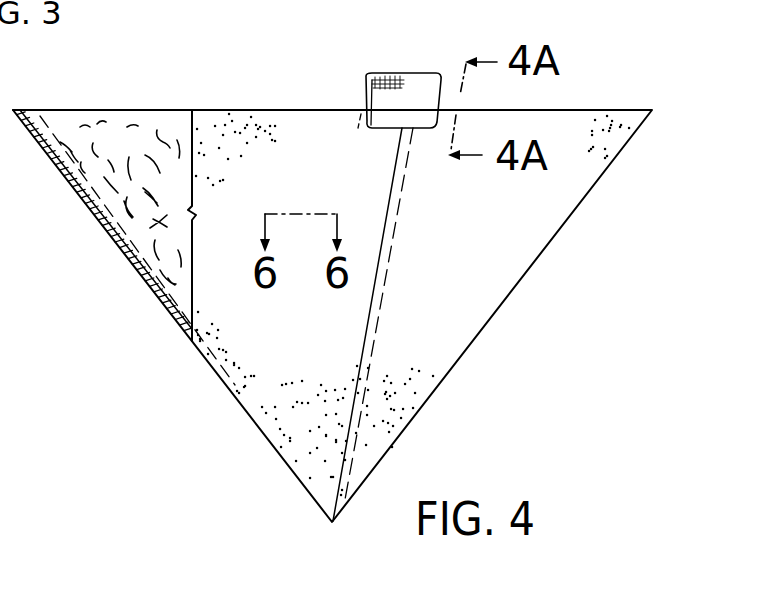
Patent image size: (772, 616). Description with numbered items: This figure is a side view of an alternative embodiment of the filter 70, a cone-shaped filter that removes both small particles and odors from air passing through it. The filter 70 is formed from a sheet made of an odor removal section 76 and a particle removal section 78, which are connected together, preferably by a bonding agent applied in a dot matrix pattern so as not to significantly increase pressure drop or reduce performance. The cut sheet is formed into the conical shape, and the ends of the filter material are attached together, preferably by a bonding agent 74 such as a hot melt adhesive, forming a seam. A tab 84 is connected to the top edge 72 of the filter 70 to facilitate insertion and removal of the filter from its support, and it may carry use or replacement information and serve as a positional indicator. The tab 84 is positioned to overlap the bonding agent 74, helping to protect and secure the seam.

The filter 70 is at (486, 333).
The top edge 72 is at (272, 108).
The bonding agent 74 is at (392, 183).
The odor removal section 76 is at (160, 297).
The particle removal section 78 is at (74, 163).
The tab 84 is at (402, 75).